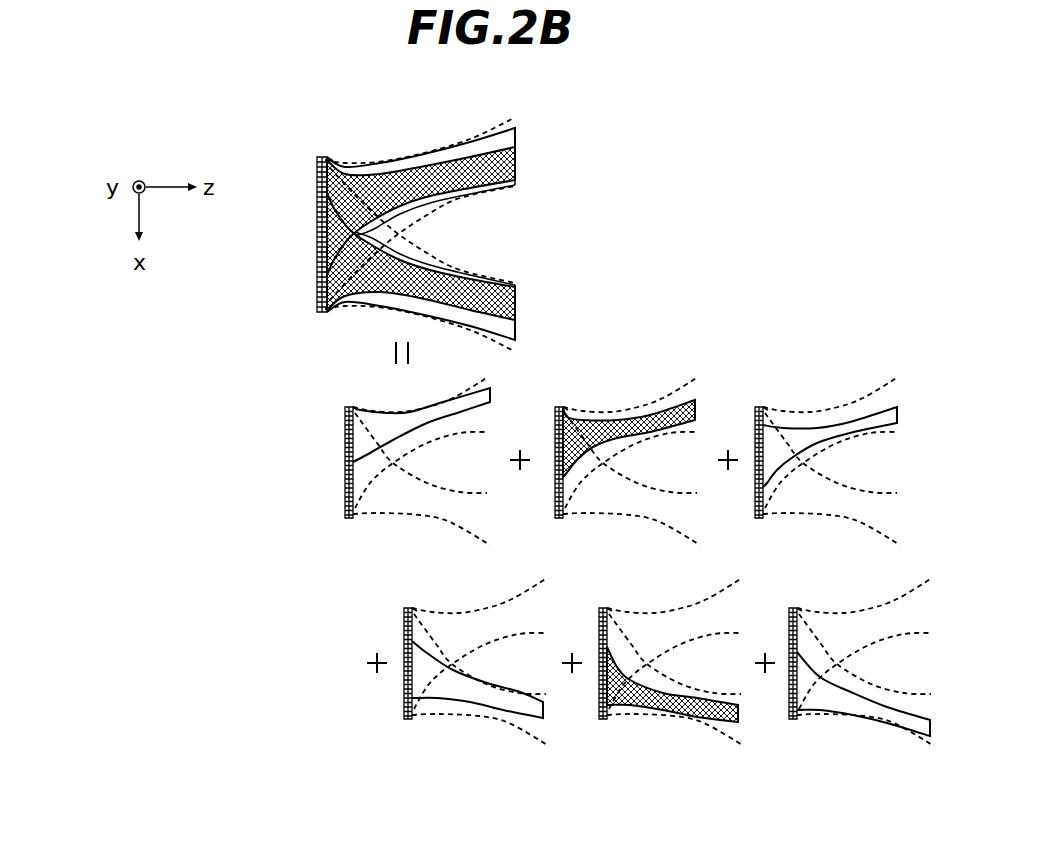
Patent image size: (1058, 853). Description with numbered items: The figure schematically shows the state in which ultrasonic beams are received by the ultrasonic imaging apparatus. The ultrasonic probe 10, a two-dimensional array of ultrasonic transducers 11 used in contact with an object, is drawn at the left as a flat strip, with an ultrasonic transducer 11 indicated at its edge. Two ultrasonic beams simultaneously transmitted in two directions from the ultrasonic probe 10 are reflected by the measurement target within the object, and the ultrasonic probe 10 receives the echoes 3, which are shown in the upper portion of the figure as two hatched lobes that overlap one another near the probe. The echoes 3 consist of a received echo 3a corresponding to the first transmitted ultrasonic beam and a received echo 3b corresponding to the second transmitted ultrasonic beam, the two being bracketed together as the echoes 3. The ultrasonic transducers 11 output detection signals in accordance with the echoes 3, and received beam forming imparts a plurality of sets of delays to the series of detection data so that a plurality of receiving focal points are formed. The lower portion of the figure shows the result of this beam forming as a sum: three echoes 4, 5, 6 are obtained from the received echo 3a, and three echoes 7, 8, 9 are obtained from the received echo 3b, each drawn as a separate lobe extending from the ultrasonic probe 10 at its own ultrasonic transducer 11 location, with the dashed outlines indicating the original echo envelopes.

The echoes 3 is at (648, 87).
The received echo 3a is at (555, 143).
The received echo 3b is at (555, 293).
The echo 4 is at (387, 428).
The echo 5 is at (623, 418).
The echo 6 is at (862, 420).
The echo 7 is at (463, 694).
The echo 8 is at (665, 700).
The echo 9 is at (836, 700).
The ultrasonic probe 10 is at (317, 262).
The ultrasonic transducer 11 is at (317, 170).